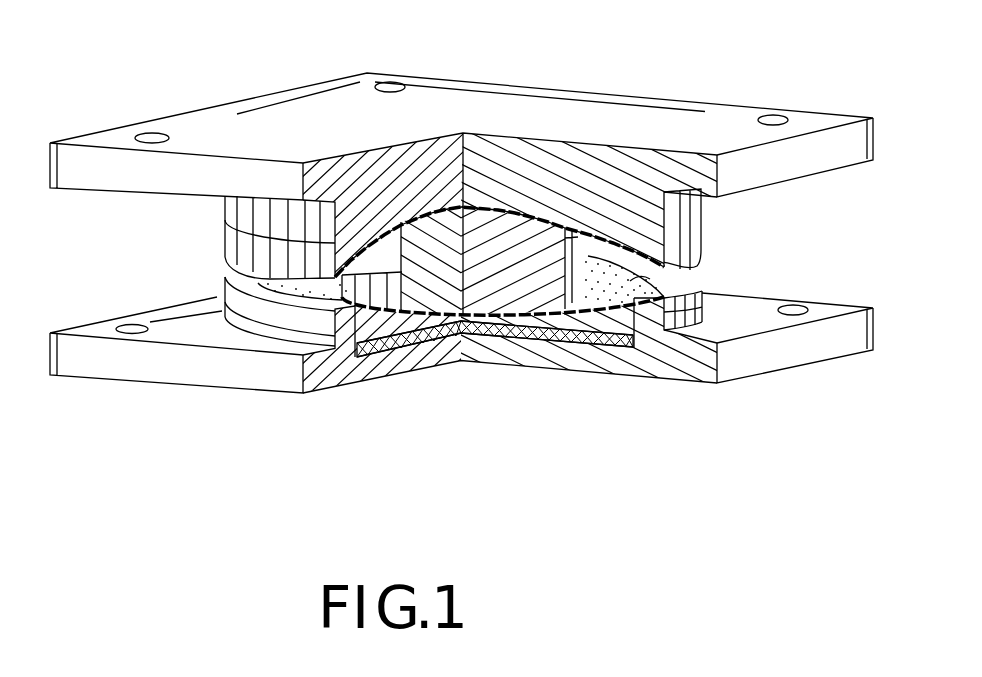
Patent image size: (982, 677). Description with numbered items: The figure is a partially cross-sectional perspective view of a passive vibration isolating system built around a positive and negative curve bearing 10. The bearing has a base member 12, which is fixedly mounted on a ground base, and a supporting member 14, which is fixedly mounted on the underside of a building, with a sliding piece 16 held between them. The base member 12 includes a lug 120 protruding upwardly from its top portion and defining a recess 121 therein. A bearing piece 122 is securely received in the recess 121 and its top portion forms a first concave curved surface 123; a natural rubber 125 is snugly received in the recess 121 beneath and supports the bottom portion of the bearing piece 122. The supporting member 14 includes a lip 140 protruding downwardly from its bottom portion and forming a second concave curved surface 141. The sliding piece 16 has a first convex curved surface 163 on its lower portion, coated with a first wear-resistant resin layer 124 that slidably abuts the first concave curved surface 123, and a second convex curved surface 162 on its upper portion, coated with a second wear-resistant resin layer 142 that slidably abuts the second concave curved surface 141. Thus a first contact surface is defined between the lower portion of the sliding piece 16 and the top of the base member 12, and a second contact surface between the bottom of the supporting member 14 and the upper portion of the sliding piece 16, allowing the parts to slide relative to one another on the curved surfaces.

The positive and negative curve bearing 10 is at (818, 277).
The base member 12 is at (770, 348).
The lug 120 is at (650, 317).
The recess 121 is at (632, 318).
The bearing piece 122 is at (388, 328).
The first concave curved surface 123 is at (587, 312).
The first wear-resistant resin layer 124 is at (703, 293).
The natural rubber 125 is at (533, 330).
The supporting member 14 is at (787, 155).
The lip 140 is at (650, 226).
The second concave curved surface 141 is at (612, 237).
The second wear-resistant resin layer 142 is at (565, 224).
The sliding piece 16 is at (497, 233).
The second convex curved surface 162 is at (437, 222).
The first convex curved surface 163 is at (462, 320).